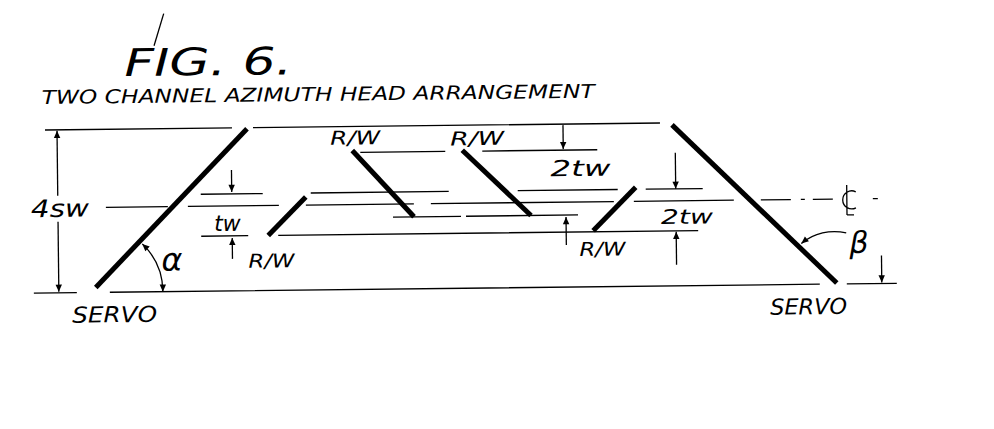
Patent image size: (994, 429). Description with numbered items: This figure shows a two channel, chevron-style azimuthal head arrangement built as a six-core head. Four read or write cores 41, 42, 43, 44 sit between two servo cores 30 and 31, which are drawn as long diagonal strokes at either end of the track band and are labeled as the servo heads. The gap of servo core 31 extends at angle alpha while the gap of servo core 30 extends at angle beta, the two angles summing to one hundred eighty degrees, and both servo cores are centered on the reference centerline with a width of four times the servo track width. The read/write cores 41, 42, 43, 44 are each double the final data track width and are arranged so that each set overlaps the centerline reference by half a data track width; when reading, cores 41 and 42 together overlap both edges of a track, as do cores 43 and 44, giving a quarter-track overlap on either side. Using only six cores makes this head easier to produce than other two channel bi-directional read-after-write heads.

The servo core 30 is at (698, 151).
The servo core 31 is at (199, 181).
The read or write core 41 is at (620, 212).
The read or write core 42 is at (294, 210).
The read or write core 43 is at (511, 203).
The read or write core 44 is at (386, 187).